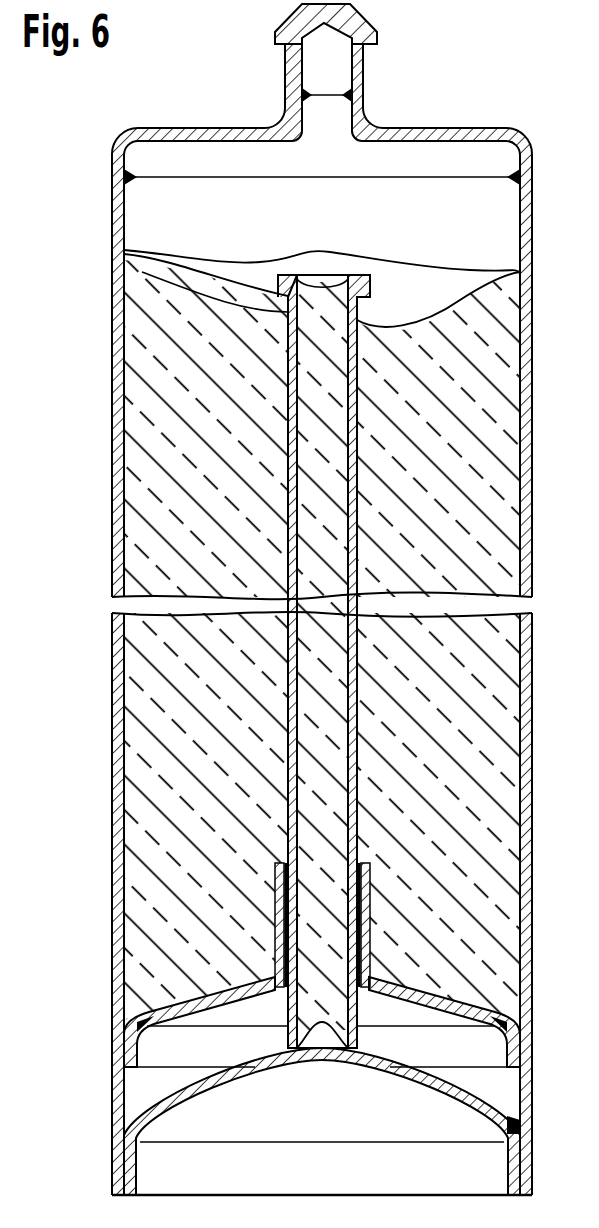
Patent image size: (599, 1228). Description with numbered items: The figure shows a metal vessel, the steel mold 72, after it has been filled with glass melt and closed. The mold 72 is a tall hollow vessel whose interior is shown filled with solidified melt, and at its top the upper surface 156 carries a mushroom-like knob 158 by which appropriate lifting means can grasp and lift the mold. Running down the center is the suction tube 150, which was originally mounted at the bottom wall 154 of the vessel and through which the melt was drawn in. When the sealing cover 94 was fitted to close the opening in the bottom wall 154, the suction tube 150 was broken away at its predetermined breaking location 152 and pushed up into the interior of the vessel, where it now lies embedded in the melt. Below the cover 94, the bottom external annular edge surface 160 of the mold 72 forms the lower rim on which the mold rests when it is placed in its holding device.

The steel mold 72 is at (112, 376).
The sealing cover 94 is at (163, 1104).
The suction tube 150 is at (298, 500).
The predetermined breaking location 152 is at (126, 272).
The bottom wall of the vessel 154 is at (165, 1000).
The upper surface 156 is at (196, 128).
The mushroom-like knob 158 is at (354, 19).
The bottom external annular edge surface 160 is at (100, 1195).